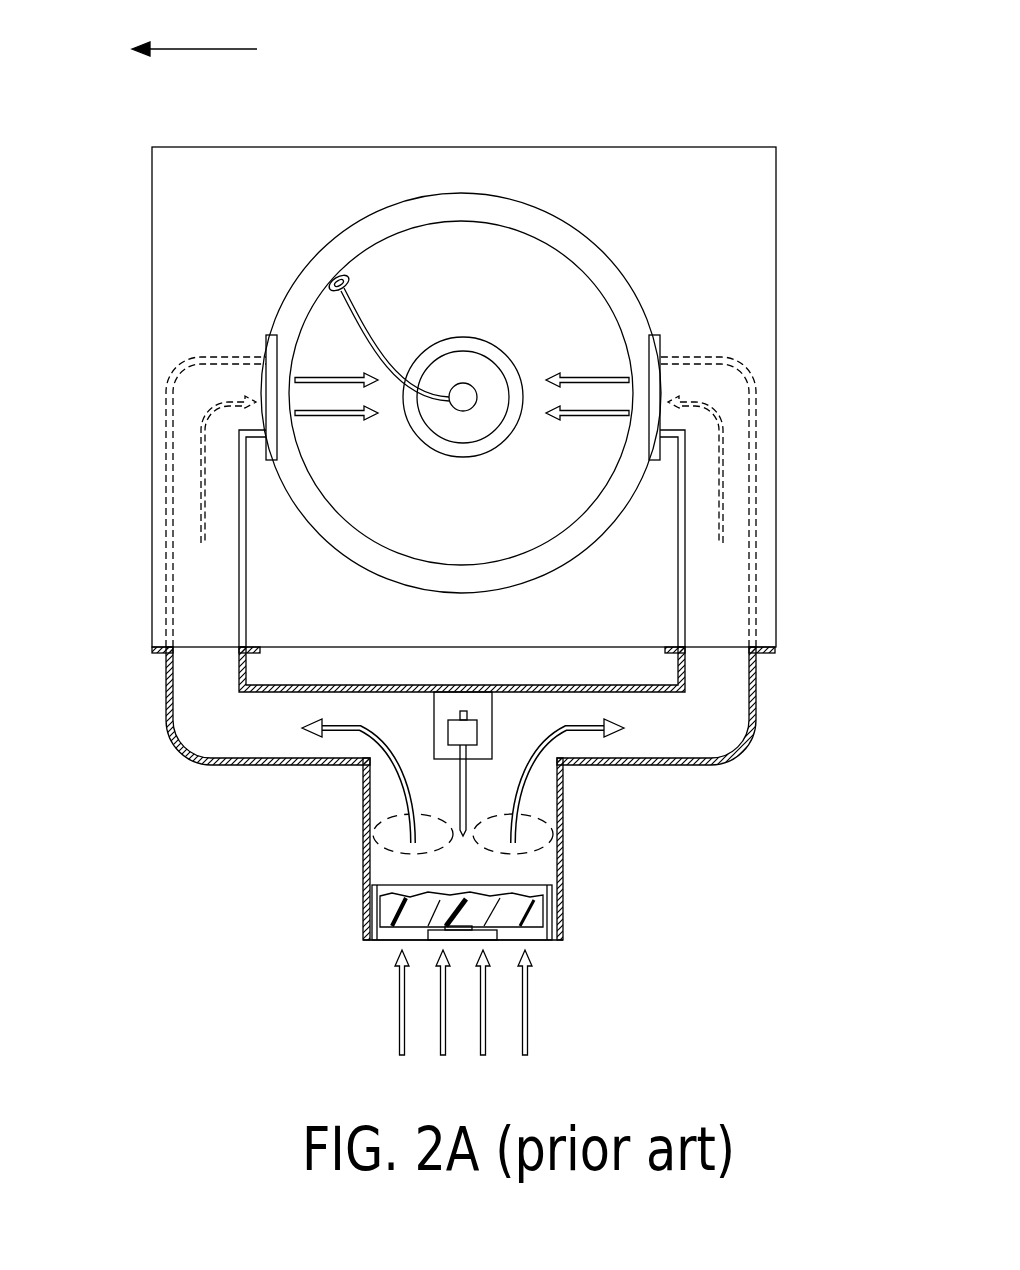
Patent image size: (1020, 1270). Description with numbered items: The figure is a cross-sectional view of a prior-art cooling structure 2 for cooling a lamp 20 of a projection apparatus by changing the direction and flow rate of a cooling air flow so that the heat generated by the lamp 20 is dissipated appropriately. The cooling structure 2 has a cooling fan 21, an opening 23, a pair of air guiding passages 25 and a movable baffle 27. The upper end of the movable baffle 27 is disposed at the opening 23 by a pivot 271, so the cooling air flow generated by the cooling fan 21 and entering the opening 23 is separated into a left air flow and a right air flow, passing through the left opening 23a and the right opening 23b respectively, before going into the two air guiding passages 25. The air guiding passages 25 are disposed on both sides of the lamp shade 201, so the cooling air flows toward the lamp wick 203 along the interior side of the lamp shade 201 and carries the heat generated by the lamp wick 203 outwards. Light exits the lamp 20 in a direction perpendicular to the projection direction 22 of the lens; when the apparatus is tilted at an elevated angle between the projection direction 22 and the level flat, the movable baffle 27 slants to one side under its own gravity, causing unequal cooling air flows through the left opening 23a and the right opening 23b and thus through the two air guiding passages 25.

The cooling structure 2 is at (632, 78).
The lamp 20 is at (677, 177).
The lamp shade 201 is at (610, 274).
The lamp wick 203 is at (475, 382).
The cooling fan 21 is at (380, 907).
The projection direction 22 is at (194, 33).
The opening 23 is at (528, 884).
The left opening 23a is at (390, 820).
The right opening 23b is at (543, 822).
The air guiding passages 25 is at (230, 716).
The movable baffle 27 is at (461, 840).
The pivot 271 is at (467, 735).